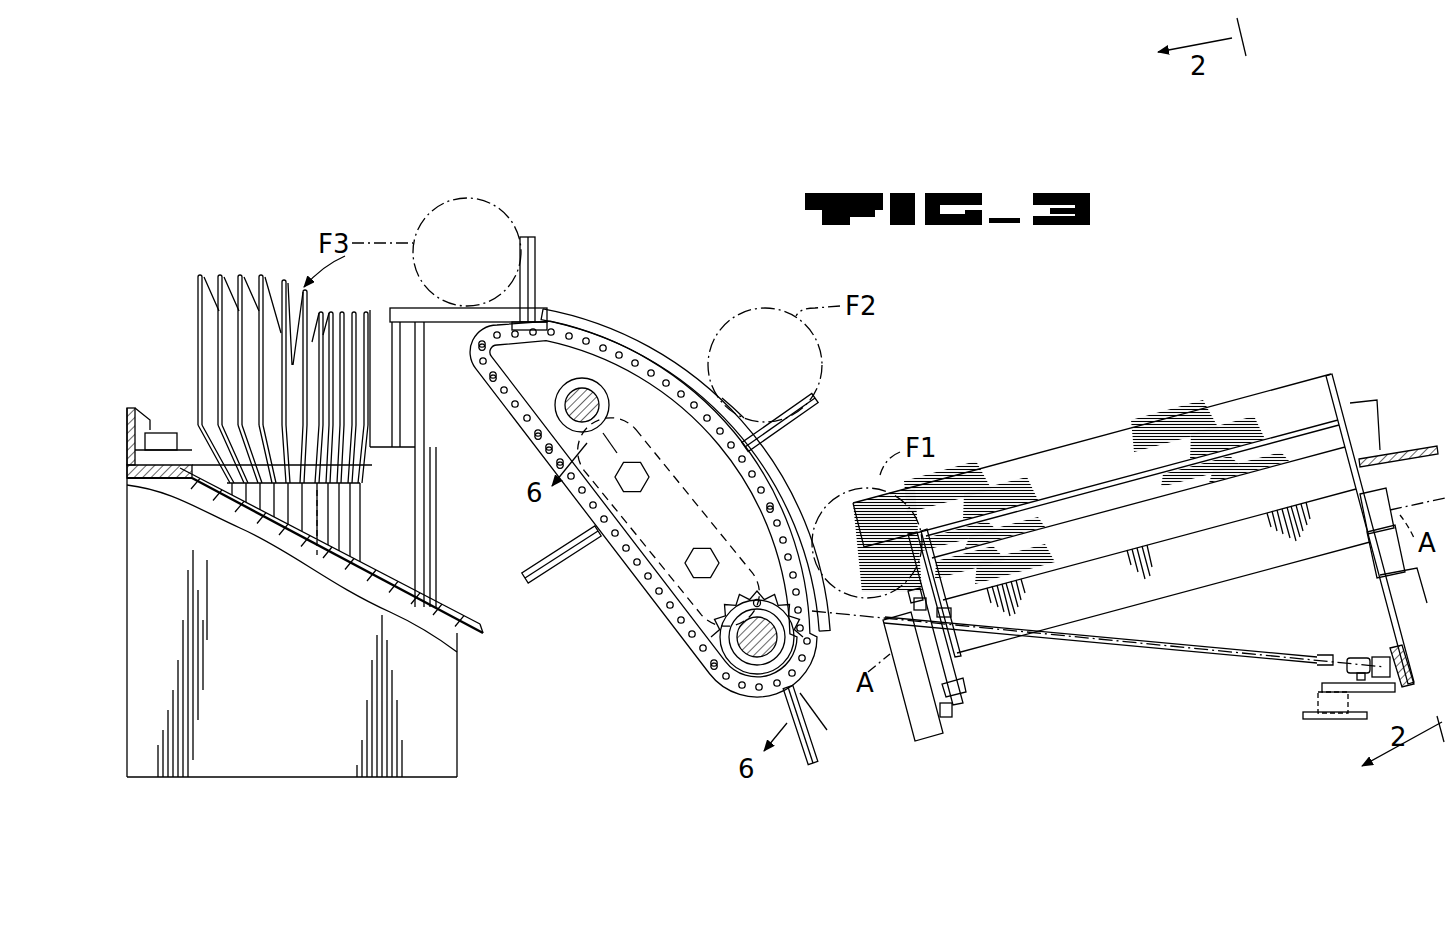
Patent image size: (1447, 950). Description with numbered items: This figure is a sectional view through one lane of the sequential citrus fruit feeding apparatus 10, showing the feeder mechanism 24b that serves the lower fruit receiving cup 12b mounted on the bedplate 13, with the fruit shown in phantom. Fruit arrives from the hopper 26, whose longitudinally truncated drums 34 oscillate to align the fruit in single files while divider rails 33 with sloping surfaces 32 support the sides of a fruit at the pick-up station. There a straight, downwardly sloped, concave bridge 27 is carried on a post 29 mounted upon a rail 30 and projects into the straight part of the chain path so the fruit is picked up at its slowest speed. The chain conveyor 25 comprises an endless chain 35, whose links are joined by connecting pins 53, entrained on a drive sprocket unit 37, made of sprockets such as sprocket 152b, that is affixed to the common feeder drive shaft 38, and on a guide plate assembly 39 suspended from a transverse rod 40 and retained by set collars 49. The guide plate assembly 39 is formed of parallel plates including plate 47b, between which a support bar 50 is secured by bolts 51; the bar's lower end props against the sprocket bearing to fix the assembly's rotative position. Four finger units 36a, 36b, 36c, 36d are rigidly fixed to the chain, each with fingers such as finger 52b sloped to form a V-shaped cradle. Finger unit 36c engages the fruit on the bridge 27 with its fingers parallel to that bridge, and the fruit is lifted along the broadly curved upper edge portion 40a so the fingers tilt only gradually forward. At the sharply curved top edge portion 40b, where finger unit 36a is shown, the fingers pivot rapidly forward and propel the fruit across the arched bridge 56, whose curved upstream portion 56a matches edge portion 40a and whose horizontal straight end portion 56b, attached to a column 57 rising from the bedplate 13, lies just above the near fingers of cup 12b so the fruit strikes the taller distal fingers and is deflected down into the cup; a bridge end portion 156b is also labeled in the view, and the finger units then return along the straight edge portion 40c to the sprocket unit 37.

The sequential citrus fruit feeding apparatus 10 is at (1020, 320).
The lower fruit receiving cup 12b is at (198, 343).
The bedplate 13 is at (406, 545).
The fruit feeder mechanism 24b is at (607, 310).
The chain conveyor 25 is at (776, 468).
The hopper 26 is at (1094, 426).
The bridge 27 is at (862, 628).
The post 29 is at (936, 743).
The rail 30 is at (1381, 460).
The sloping surface 32 is at (1221, 413).
The divider rail 33 is at (1021, 453).
The longitudinally truncated drum 34 is at (1240, 570).
The endless chain 35 is at (640, 576).
The finger unit 36a is at (540, 236).
The finger unit 36b is at (536, 556).
The finger unit 36c is at (824, 760).
The finger unit 36d is at (824, 403).
The drive sprocket unit 37 is at (704, 642).
The feeder drive shaft 38 is at (746, 652).
The guide plate assembly 39 is at (516, 380).
The rod 40 is at (599, 406).
The upper edge portion 40a is at (782, 492).
The sharply curved top edge portion 40b is at (490, 352).
The straight edge portion 40c is at (524, 443).
The plate 47b is at (546, 459).
The set collar 49 is at (560, 407).
The support bar 50 is at (681, 470).
The bolt 51 is at (692, 548).
The left finger 52b is at (538, 248).
The chain roller 53 is at (540, 338).
The arched bridge 56 is at (633, 336).
The curved upstream portion 56a is at (740, 420).
The straight end portion 56b is at (453, 306).
The column 57 is at (408, 336).
The sprocket 152b is at (715, 623).
The guide 156b is at (704, 384).